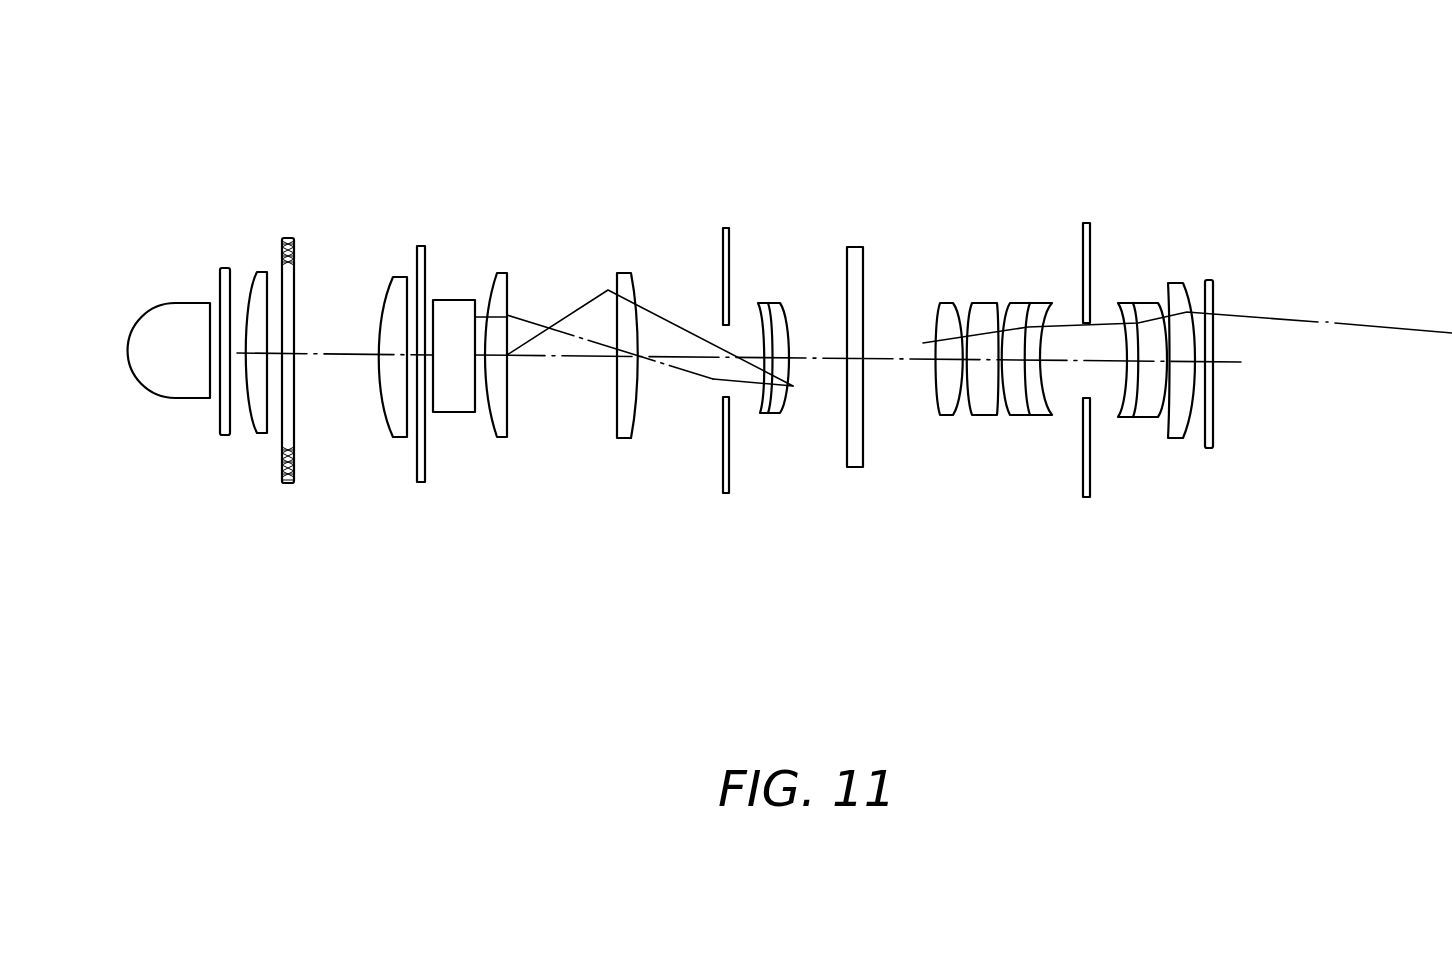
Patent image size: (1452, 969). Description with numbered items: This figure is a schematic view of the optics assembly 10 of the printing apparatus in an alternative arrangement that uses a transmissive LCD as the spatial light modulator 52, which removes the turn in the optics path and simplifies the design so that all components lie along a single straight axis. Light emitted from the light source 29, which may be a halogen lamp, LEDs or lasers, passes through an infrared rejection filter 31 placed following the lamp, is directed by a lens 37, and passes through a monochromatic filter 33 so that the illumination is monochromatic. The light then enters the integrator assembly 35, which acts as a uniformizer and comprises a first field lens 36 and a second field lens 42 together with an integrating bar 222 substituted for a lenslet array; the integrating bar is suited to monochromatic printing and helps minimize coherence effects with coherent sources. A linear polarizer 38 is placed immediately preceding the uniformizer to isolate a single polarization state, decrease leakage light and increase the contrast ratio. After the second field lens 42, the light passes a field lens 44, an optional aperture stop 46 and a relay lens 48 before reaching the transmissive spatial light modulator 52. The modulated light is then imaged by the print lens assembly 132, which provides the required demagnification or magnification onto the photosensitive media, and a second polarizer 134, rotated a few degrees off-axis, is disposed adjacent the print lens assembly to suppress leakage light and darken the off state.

The optics assembly 10 is at (558, 128).
The light source 29 is at (185, 375).
The infrared rejection filter 31 is at (223, 267).
The lens 37 is at (260, 417).
The monochromatic filter 33 is at (292, 486).
The integrator assembly 35 is at (463, 441).
The field lens 36 is at (393, 423).
The linear polarizer 38 is at (426, 483).
The integrating bar 222 is at (447, 300).
The second field lens 42 is at (510, 430).
The field lens 44 is at (615, 438).
The aperture stop 46 is at (723, 228).
The relay lens 48 is at (763, 302).
The spatial light modulator 52 is at (863, 437).
The print lens assembly 132 is at (952, 220).
The second polarizer 134 is at (1217, 298).